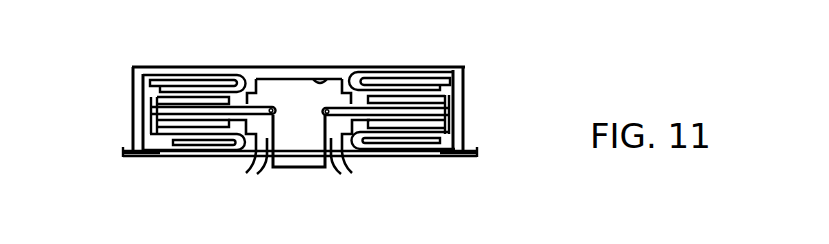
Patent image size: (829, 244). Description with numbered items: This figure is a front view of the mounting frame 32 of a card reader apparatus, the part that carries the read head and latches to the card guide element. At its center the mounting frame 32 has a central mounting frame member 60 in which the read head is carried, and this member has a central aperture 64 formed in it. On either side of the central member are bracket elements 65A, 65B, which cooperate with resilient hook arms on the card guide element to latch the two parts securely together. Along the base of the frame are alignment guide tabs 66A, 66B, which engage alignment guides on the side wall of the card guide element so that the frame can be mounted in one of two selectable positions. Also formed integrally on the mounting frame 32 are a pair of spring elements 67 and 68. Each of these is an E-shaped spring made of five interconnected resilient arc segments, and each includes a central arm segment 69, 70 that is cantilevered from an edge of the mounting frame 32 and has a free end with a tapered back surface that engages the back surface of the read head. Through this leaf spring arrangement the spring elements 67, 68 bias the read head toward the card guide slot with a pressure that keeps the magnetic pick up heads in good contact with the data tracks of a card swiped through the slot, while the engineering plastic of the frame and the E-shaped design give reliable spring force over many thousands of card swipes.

The mounting frame 32 is at (238, 158).
The central mounting frame member 60 is at (283, 70).
The central aperture 64 is at (320, 82).
The bracket element 65A is at (131, 92).
The bracket element 65B is at (466, 93).
The alignment guide tab 66A is at (124, 150).
The alignment guide tab 66B is at (476, 153).
The integral spring element 67 is at (173, 139).
The integral spring element 68 is at (400, 140).
The central arm segment 69 is at (262, 138).
The central arm segment 70 is at (334, 140).